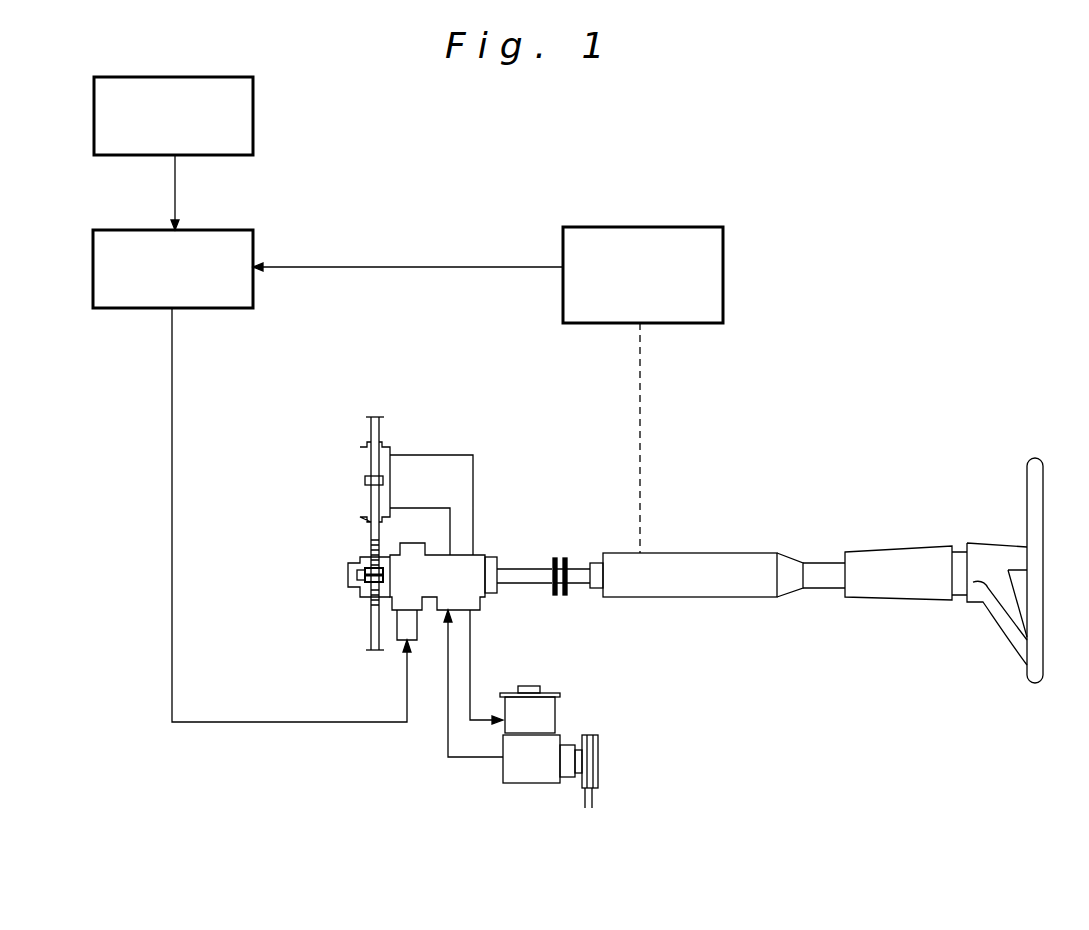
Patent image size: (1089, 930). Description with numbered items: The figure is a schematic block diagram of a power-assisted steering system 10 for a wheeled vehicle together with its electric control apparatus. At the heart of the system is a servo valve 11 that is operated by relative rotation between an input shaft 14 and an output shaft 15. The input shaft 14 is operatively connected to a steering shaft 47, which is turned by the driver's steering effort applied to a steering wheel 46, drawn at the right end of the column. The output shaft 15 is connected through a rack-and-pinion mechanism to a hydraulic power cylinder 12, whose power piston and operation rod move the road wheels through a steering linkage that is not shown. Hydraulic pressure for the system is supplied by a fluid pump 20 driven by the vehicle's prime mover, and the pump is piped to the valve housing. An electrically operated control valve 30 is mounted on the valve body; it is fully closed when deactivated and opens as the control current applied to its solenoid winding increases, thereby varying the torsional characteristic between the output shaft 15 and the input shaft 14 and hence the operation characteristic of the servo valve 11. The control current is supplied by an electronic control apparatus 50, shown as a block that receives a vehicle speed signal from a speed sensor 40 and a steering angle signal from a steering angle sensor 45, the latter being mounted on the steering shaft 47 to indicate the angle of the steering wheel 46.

The power-assisted steering system 10 is at (496, 516).
The servo valve 11 is at (475, 600).
The hydraulic power cylinder 12 is at (362, 482).
The input shaft 14 is at (518, 582).
The output shaft 15 is at (360, 585).
The fluid pump 20 is at (528, 775).
The electrically operated control valve 30 is at (403, 648).
The speed sensor 40 is at (213, 77).
The steering angle sensor 45 is at (686, 227).
The steering wheel 46 is at (1035, 487).
The steering shaft 47 is at (577, 580).
The electronic control apparatus 50 is at (213, 230).